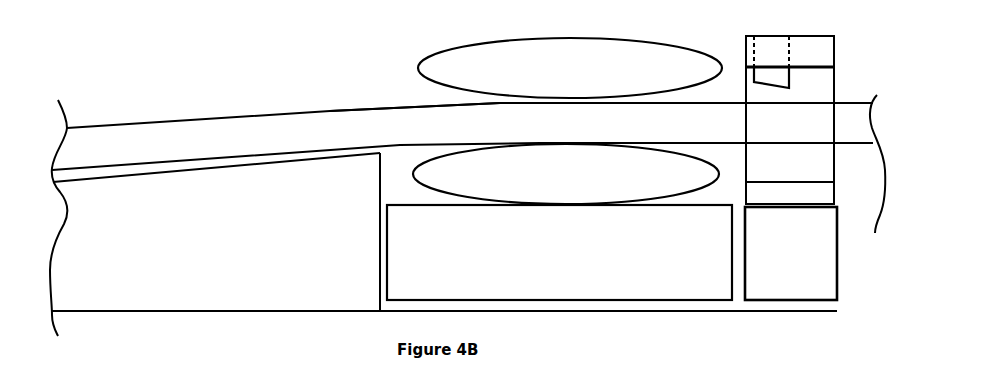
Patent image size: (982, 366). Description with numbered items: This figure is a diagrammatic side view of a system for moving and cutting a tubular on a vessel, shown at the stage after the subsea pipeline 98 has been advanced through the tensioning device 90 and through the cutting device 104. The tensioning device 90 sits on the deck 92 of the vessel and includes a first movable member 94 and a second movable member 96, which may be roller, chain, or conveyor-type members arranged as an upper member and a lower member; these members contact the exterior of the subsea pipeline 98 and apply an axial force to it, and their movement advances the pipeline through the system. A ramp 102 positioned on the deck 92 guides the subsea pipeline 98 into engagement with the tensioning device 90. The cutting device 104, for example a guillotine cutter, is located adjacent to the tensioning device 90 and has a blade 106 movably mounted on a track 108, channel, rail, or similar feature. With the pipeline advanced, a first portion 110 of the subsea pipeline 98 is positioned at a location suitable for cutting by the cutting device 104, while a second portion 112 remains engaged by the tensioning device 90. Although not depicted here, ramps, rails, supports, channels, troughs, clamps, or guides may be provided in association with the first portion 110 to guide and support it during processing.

The tensioning device 90 is at (536, 284).
The deck 92 is at (737, 312).
The first movable member 94 is at (482, 50).
The second movable member 96 is at (505, 188).
The subsea pipeline 98 is at (348, 115).
The ramp 102 is at (102, 183).
The cutting device 104 is at (826, 259).
The blade 106 is at (770, 47).
The track 108 is at (827, 53).
The first portion 110 is at (852, 94).
The second portion 112 is at (394, 99).